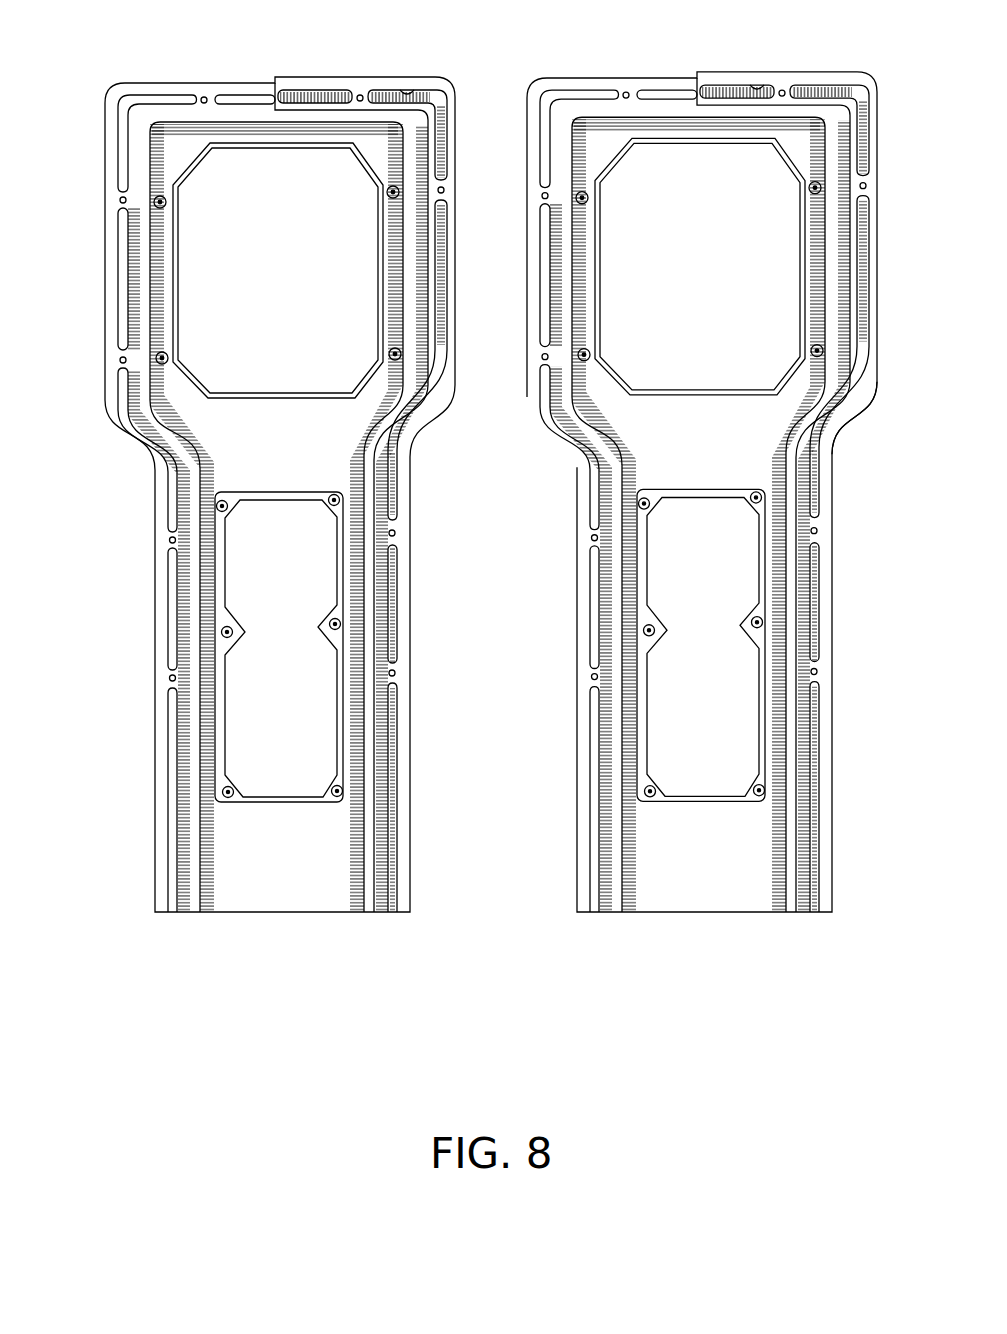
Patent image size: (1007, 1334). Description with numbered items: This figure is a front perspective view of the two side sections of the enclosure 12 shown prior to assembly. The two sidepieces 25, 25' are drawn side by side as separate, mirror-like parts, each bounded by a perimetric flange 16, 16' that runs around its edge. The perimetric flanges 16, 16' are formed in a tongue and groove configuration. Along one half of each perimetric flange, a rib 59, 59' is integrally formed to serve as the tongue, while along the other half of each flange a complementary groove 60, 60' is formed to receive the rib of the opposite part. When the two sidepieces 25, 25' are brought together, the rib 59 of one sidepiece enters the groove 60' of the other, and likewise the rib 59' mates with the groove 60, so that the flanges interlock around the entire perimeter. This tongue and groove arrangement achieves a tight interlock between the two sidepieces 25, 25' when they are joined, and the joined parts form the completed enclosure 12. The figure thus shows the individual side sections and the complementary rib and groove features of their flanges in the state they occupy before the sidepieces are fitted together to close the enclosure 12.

The enclosure 12 is at (890, 930).
The perimetric flange 16 is at (243, 494).
The perimetric flange 16' is at (735, 492).
The sidepiece 25 is at (103, 501).
The sidepiece 25' is at (878, 489).
The rib 59 is at (196, 96).
The rib 59' is at (627, 94).
The groove 60 is at (389, 94).
The groove 60' is at (794, 96).